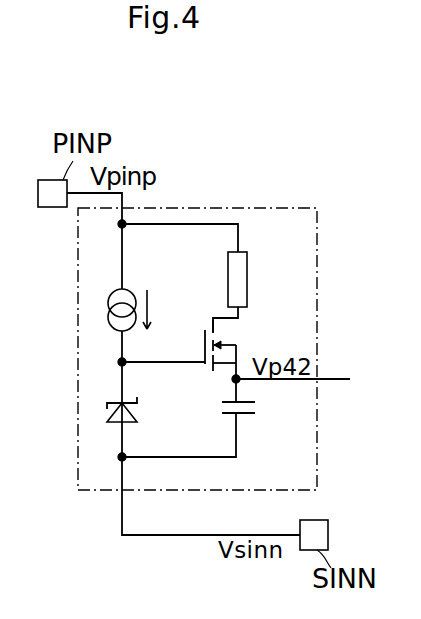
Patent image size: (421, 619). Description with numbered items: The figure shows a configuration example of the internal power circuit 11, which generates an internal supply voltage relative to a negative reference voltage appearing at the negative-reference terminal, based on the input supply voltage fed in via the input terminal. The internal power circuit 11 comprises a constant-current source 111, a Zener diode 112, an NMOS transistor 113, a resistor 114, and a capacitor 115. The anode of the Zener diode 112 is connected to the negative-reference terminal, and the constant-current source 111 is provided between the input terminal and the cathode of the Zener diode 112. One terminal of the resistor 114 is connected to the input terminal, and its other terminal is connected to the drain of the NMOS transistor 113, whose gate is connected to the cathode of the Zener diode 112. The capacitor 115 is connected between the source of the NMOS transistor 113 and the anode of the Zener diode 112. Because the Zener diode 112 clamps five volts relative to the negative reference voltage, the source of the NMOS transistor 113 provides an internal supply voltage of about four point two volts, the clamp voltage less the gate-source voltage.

The internal power circuit 11 is at (300, 205).
The constant-current source 111 is at (133, 290).
The Zener diode 112 is at (138, 413).
The NMOS transistor 113 is at (233, 342).
The resistor 114 is at (247, 265).
The capacitor 115 is at (258, 408).